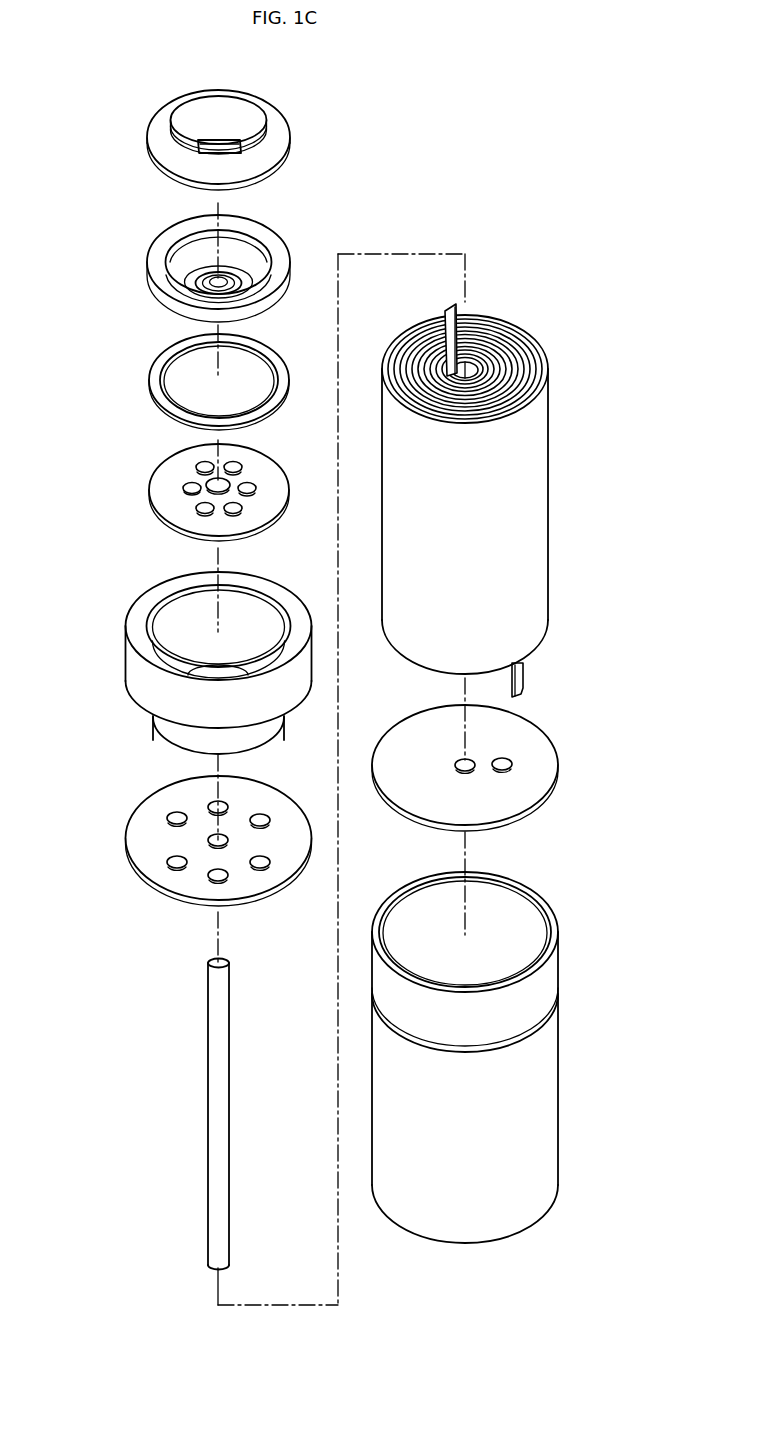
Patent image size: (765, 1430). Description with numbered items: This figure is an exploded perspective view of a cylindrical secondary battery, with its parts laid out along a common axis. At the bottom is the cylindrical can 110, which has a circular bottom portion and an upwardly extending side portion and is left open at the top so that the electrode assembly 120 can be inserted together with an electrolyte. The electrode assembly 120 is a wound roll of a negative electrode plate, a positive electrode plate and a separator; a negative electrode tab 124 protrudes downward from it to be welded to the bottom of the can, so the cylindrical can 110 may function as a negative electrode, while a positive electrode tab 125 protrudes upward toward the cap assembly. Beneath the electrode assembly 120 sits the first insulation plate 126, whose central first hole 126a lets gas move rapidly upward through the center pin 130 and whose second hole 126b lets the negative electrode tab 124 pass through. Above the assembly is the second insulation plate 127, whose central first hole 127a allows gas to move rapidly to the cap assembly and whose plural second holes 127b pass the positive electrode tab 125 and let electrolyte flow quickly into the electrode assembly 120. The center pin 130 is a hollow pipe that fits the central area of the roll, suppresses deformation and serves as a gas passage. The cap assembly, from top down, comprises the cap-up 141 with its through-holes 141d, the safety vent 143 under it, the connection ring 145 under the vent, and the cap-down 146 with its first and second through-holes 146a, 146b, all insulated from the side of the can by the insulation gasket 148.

The cylindrical can 110 is at (558, 1097).
The electrode assembly 120 is at (552, 510).
The negative electrode tab 124 is at (525, 672).
The positive electrode tab 125 is at (449, 309).
The first insulation plate 126 is at (515, 781).
The first hole 126a is at (470, 758).
The second hole 126b is at (510, 757).
The second insulation plate 127 is at (174, 832).
The first hole 127a is at (213, 838).
The second holes 127b is at (178, 812).
The center pin 130 is at (212, 1103).
The cap-up 141 is at (188, 117).
The through-holes 141d is at (207, 155).
The safety vent 143 is at (157, 260).
The connection ring 145 is at (158, 380).
The cap-down 146 is at (174, 489).
The first through-hole 146a is at (213, 481).
The second through-hole 146b is at (191, 487).
The insulation gasket 148 is at (128, 665).